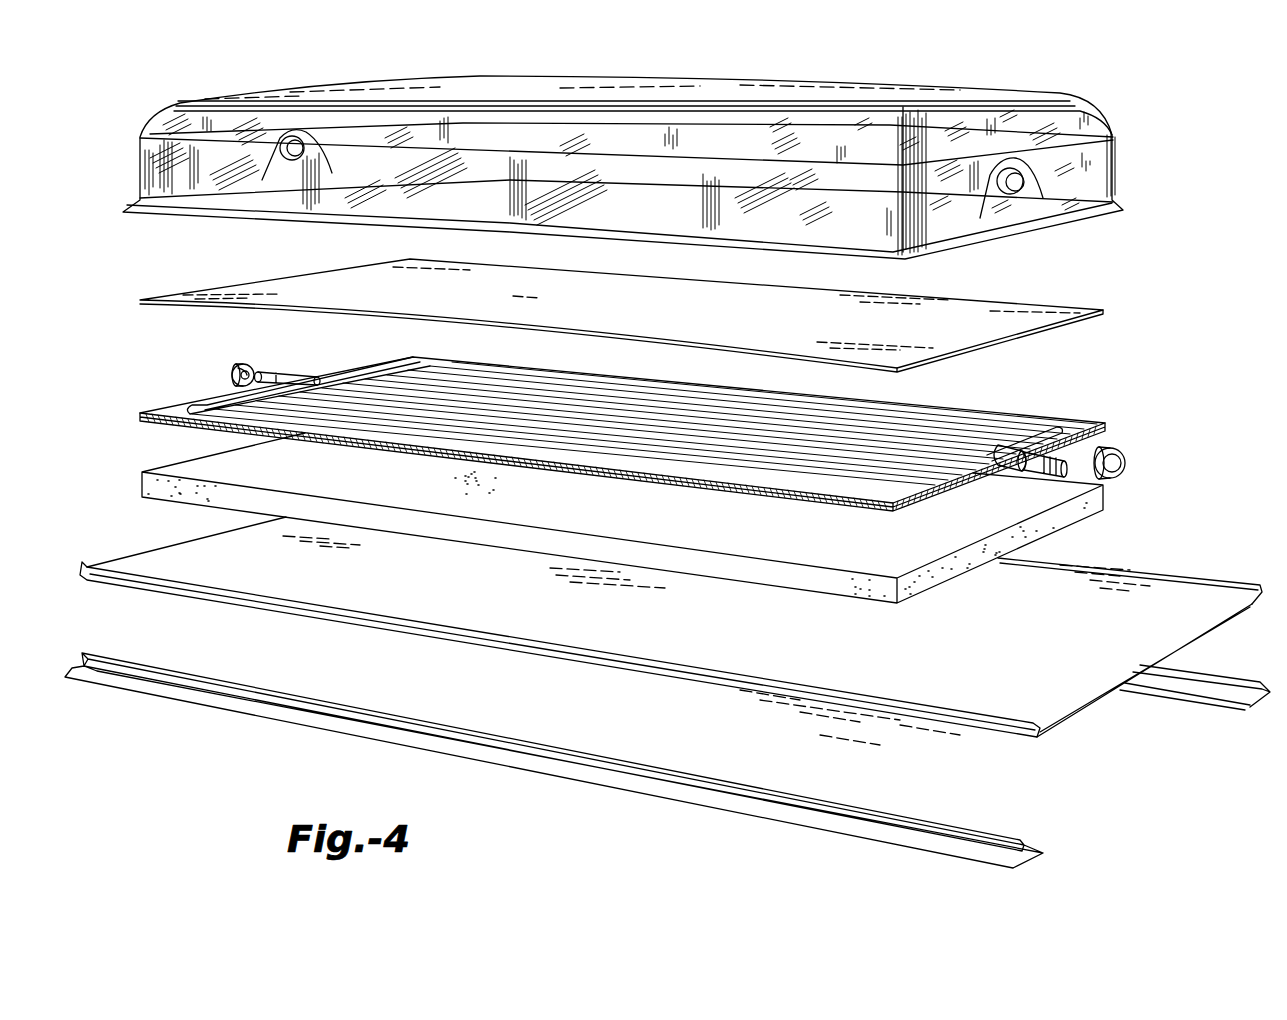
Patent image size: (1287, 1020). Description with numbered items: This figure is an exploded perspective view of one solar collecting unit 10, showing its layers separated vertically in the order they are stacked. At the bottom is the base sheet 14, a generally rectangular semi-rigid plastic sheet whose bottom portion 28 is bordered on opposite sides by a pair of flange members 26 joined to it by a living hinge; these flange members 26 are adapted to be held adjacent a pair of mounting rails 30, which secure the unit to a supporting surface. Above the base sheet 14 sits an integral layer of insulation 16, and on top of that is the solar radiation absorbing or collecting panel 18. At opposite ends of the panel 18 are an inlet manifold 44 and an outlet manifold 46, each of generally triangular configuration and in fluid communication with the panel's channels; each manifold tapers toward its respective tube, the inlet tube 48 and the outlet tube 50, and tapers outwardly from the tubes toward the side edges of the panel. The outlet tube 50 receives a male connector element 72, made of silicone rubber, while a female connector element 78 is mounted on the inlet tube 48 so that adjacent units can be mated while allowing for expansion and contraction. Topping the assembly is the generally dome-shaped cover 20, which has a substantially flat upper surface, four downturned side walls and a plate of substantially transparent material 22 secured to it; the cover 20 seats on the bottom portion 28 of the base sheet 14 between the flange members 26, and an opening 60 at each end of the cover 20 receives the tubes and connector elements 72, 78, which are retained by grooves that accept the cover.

The solar collecting unit 10 is at (1135, 124).
The base sheet 14 is at (1240, 552).
The layer of insulation 16 is at (1068, 527).
The solar radiation absorbing or collecting panel 18 is at (1092, 444).
The cover 20 is at (1043, 86).
The plate of substantially transparent material 22 is at (1097, 330).
The flange members 26 is at (1125, 582).
The bottom portion of the base sheet 28 is at (1095, 698).
The mounting rails 30 is at (1218, 700).
The inlet manifold 44 is at (985, 450).
The outlet manifold 46 is at (367, 378).
The inlet tube 48 is at (1036, 450).
The outlet tube 50 is at (302, 340).
The opening 60 is at (266, 102).
The male connector element 72 is at (231, 372).
The female connector element 78 is at (1123, 472).